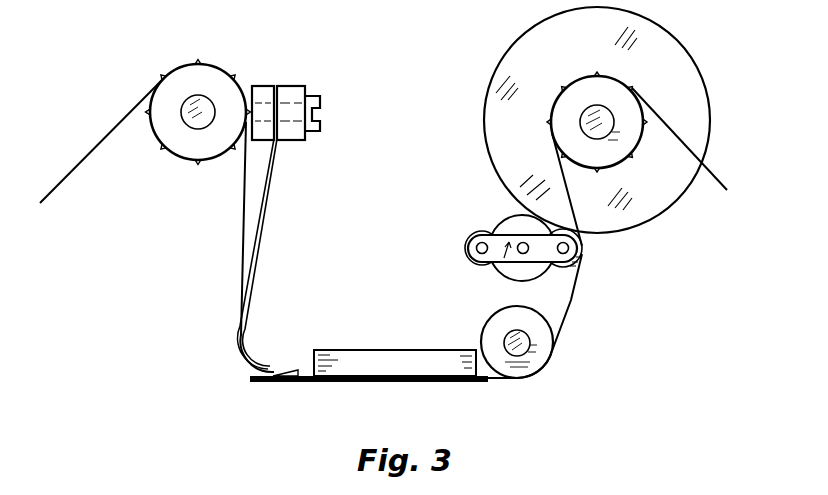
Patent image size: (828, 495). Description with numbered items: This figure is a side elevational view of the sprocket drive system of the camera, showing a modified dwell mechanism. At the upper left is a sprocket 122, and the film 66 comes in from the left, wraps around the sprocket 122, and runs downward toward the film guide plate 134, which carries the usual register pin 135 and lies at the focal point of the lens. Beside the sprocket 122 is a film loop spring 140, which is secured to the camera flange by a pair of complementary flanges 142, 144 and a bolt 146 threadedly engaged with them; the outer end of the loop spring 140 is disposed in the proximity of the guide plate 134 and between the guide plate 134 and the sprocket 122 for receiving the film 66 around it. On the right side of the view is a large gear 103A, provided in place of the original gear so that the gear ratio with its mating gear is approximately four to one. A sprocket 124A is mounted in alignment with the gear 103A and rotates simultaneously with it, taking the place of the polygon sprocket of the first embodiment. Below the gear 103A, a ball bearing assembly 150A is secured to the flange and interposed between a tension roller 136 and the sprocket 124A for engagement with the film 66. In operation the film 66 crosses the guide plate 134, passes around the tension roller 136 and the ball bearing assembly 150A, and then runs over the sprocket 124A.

The sprocket 122 is at (212, 82).
The film 66 is at (241, 219).
The film loop spring 140 is at (266, 222).
The complementary flange 144 is at (258, 92).
The complementary flange 142 is at (292, 92).
The bolt 146 is at (324, 103).
The film guide plate 134 is at (322, 381).
The register pin 135 is at (295, 370).
The gear 103A is at (672, 55).
The sprocket 124A is at (623, 112).
The ball bearing assembly 150A is at (502, 262).
The tension roller 136 is at (533, 366).